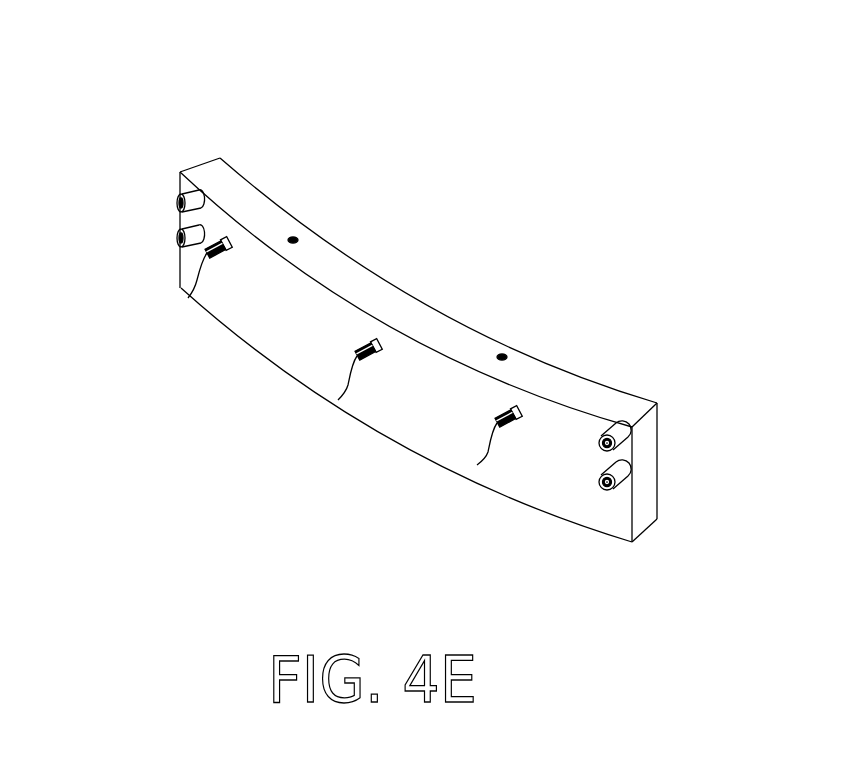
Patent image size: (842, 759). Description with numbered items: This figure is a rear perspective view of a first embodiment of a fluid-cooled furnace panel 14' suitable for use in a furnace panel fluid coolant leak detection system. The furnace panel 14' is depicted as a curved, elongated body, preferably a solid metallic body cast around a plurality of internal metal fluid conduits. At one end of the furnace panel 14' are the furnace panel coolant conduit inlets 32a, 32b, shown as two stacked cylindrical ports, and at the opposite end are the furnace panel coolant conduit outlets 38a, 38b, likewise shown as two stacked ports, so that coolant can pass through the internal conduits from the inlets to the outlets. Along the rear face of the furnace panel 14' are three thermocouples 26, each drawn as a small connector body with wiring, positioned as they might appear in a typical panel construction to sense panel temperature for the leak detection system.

The furnace panel 14' is at (417, 285).
The thermocouple 26 is at (227, 257).
The furnace panel coolant conduit inlet 32a is at (177, 202).
The furnace panel coolant conduit inlet 32b is at (177, 238).
The furnace panel coolant conduit outlet 38a is at (614, 445).
The furnace panel coolant conduit outlet 38b is at (614, 483).